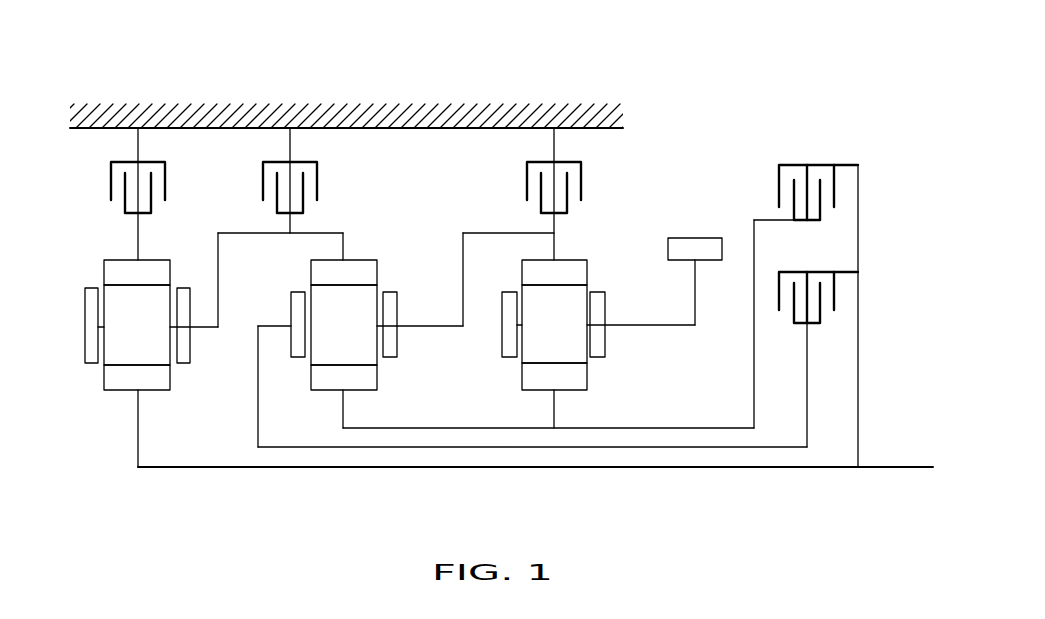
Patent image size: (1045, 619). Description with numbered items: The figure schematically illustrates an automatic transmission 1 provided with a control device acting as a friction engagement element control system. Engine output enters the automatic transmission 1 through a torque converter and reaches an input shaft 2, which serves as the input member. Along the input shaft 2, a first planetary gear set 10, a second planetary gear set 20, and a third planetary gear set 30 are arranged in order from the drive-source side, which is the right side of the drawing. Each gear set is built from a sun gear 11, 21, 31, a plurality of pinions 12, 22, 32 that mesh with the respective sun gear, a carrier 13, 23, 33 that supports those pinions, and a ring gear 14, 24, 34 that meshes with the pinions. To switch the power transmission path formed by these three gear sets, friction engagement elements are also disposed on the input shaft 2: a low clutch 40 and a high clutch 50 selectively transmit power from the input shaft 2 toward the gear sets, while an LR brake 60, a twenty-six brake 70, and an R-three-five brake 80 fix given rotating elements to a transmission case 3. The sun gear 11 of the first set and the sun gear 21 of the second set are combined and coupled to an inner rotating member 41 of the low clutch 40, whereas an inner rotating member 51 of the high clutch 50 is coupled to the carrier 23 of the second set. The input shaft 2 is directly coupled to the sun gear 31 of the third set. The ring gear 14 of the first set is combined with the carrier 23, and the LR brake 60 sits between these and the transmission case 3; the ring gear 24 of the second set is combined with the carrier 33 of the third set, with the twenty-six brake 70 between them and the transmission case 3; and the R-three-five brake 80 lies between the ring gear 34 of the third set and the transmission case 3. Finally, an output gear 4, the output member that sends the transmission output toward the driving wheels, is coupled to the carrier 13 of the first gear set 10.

The automatic transmission 1 is at (832, 106).
The input shaft 2 is at (890, 466).
The transmission case 3 is at (462, 113).
The output gear 4 is at (700, 238).
The first planetary gear set 10 is at (539, 313).
The sun gear 11 is at (533, 390).
The pinions 12 is at (532, 348).
The carrier 13 is at (500, 332).
The ring gear 14 is at (522, 277).
The second planetary gear set 20 is at (326, 322).
The sun gear 21 is at (340, 392).
The pinions 22 is at (330, 375).
The carrier 23 is at (292, 345).
The ring gear 24 is at (311, 272).
The third planetary gear set 30 is at (124, 314).
The sun gear 31 is at (128, 392).
The pinions 32 is at (128, 353).
The carrier 33 is at (85, 333).
The ring gear 34 is at (104, 275).
The low clutch 40 is at (800, 224).
The inner rotating member 41 is at (755, 332).
The high clutch 50 is at (812, 325).
The inner rotating member 51 is at (773, 447).
The LR brake 60 is at (582, 185).
The 26 brake 70 is at (318, 185).
The R35 brake 80 is at (168, 185).